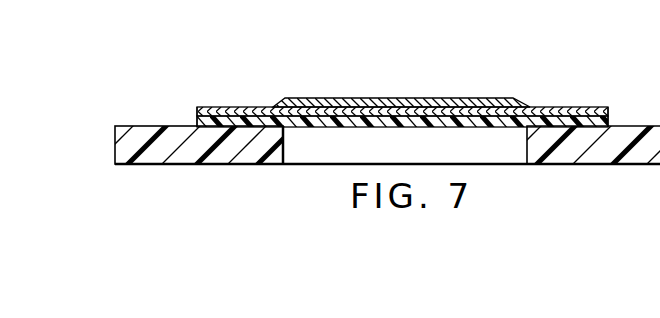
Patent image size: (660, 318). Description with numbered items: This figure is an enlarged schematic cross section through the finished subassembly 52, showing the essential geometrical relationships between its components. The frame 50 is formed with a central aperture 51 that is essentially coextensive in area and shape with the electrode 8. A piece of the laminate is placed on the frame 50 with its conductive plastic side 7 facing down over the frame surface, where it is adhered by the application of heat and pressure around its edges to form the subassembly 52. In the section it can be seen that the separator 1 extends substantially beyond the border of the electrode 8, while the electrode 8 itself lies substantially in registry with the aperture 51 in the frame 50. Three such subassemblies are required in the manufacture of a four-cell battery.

The separator 1 is at (402, 99).
The conductive plastic side 7 is at (422, 128).
The electrode 8 is at (470, 112).
The frame 50 is at (604, 165).
The central aperture 51 is at (293, 140).
The subassembly 52 is at (345, 93).